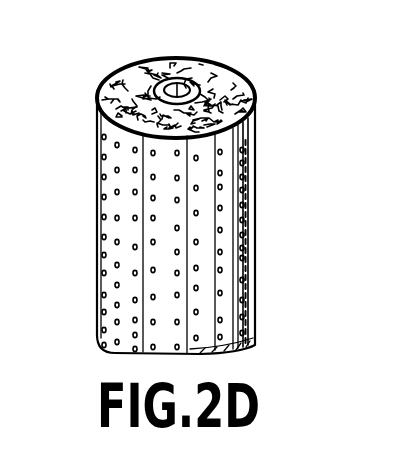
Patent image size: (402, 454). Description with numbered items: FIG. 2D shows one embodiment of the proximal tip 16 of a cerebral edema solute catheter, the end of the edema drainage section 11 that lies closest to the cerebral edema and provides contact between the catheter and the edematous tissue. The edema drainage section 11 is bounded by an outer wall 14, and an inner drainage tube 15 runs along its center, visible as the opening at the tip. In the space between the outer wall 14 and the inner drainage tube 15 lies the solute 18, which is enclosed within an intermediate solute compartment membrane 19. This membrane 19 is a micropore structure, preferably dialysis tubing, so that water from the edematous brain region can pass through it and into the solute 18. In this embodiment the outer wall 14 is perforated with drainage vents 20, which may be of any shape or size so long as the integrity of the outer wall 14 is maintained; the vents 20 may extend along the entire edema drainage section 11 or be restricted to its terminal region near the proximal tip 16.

The edema drainage section 11 is at (258, 281).
The outer wall 14 is at (254, 246).
The inner drainage tube 15 is at (192, 58).
The proximal tip 16 is at (226, 56).
The solute 18 is at (123, 67).
The intermediate solute compartment membrane 19 is at (98, 85).
The drainage vents 20 is at (252, 140).